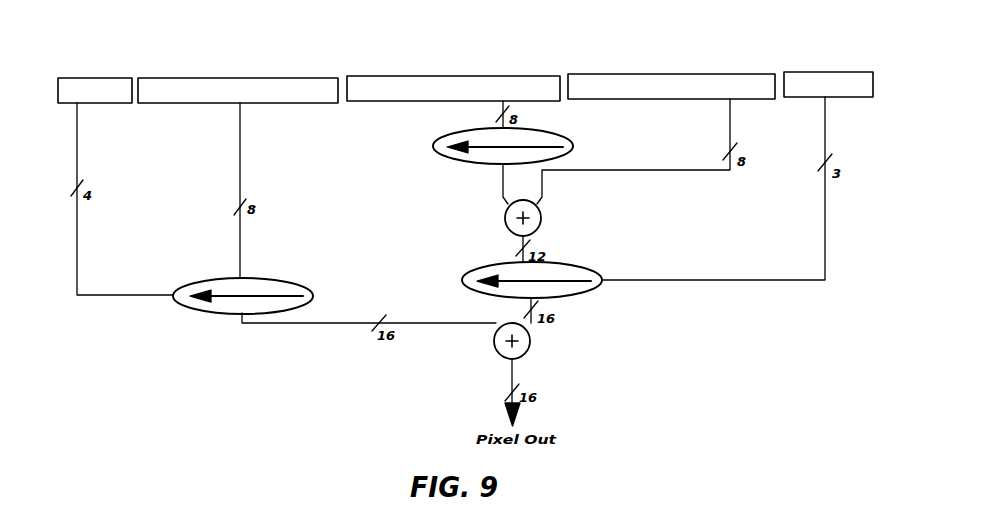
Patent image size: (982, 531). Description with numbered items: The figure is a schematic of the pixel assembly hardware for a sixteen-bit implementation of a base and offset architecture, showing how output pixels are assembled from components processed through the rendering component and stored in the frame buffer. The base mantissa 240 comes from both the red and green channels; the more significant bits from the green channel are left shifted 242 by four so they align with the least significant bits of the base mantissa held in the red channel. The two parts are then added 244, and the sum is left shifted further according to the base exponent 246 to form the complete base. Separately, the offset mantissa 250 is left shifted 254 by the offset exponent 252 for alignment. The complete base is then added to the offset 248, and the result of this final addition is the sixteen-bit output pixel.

The base mantissa 240 is at (610, 74).
The left shift by four 242 is at (434, 146).
The adder 244 is at (541, 214).
The base exponent 246 is at (815, 72).
The offset adder 248 is at (530, 338).
The offset mantissa 250 is at (222, 78).
The offset exponent 252 is at (97, 78).
The offset left shift 254 is at (313, 294).